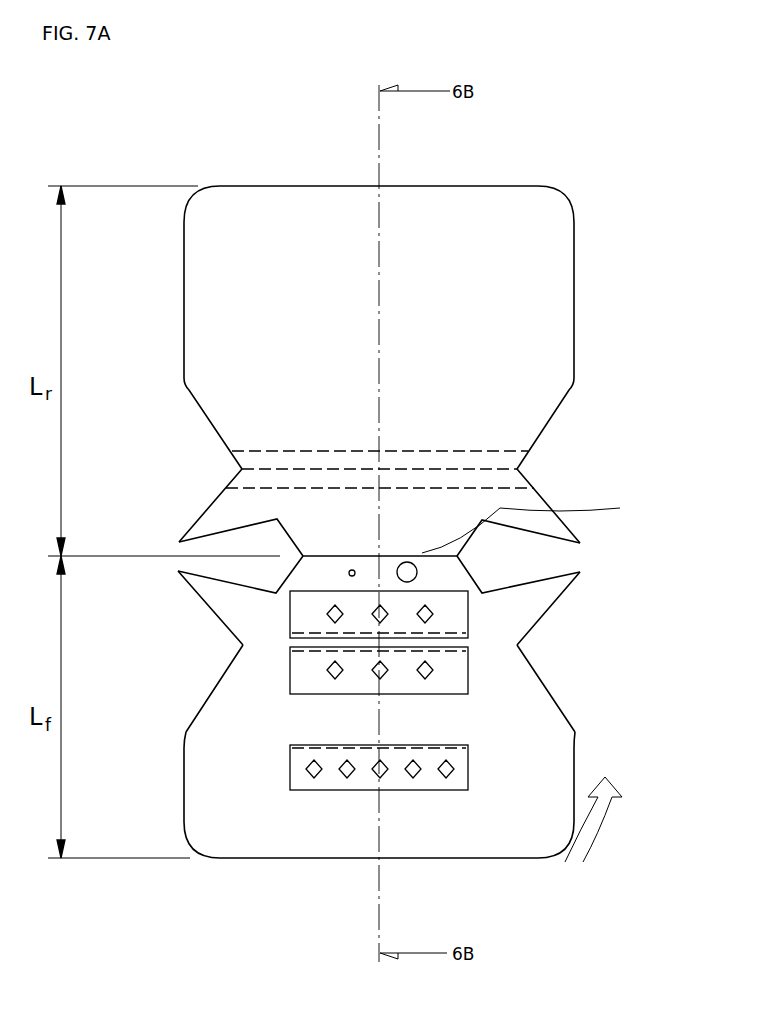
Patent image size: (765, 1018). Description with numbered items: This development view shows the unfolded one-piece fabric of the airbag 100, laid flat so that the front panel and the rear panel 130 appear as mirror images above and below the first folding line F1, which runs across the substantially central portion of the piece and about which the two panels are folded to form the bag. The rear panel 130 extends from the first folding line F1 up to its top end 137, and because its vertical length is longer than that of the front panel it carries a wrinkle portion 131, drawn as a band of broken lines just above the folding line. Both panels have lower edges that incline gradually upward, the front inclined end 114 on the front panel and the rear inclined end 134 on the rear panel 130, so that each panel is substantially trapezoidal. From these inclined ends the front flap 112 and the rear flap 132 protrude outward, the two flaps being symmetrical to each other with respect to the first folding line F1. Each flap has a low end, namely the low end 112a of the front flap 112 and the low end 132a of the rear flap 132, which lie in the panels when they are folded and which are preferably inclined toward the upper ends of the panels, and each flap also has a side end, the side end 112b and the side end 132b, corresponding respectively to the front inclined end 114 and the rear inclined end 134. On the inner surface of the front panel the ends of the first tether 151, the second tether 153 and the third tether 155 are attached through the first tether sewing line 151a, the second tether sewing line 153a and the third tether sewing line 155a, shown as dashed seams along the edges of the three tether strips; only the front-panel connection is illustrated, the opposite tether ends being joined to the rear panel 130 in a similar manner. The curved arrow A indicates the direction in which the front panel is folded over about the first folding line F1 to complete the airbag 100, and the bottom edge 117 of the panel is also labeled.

The airbag 100 is at (213, 153).
The top end of the rear panel 137 is at (302, 186).
The rear panel 130 is at (574, 270).
The rear inclined end 134 is at (555, 415).
The wrinkle portion 131 is at (508, 475).
The rear flap 132 is at (212, 523).
The low end of the rear flap 132a is at (217, 532).
The side end of the rear flap 132b is at (218, 495).
The first folding line F1 is at (531, 525).
The front flap 112 is at (212, 590).
The low end of the front flap 112a is at (540, 581).
The side end of the front flap 112b is at (557, 590).
The front inclined end 114 is at (562, 705).
The bottom edge of front portion 117 is at (302, 858).
The first tether 151 is at (290, 622).
The first tether sewing line 151a is at (450, 632).
The second tether 153 is at (290, 672).
The second tether sewing line 153a is at (452, 650).
The third tether 155 is at (290, 772).
The third tether sewing line 155a is at (453, 745).
The arrow A is at (593, 819).